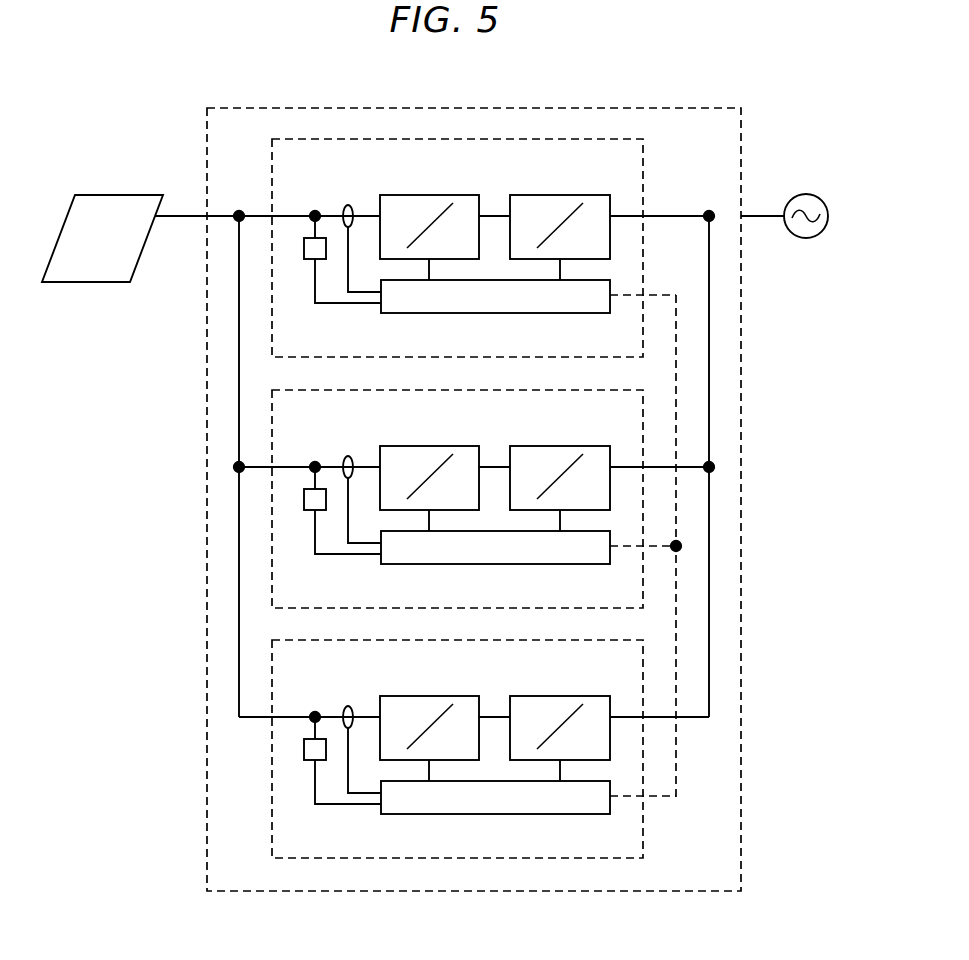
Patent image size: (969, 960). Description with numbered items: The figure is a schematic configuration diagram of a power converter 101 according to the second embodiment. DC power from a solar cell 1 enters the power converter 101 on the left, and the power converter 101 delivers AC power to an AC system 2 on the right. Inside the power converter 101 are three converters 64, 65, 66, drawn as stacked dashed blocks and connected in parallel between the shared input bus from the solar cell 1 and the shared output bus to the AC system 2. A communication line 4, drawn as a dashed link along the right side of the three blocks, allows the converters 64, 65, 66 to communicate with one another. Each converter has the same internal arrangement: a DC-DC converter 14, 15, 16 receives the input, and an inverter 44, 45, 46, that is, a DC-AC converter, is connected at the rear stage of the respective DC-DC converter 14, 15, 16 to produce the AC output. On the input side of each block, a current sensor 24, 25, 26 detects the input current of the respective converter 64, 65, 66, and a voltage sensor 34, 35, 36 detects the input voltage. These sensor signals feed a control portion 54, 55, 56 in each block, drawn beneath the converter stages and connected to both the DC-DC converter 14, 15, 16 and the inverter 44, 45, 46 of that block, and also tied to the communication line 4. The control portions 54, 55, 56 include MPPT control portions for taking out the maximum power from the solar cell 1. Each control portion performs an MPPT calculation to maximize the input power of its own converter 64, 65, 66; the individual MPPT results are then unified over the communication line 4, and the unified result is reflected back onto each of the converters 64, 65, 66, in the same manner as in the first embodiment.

The solar cell 1 is at (135, 193).
The AC system 2 is at (808, 193).
The power converter 101 is at (647, 107).
The communication line 4 is at (676, 761).
The DC-DC converter 14 is at (430, 195).
The DC-DC converter 15 is at (434, 473).
The DC-DC converter 16 is at (434, 723).
The current sensor 24 is at (348, 205).
The current sensor 25 is at (361, 476).
The current sensor 26 is at (361, 726).
The voltage sensor 34 is at (307, 265).
The voltage sensor 35 is at (330, 510).
The voltage sensor 36 is at (330, 760).
The inverter 44 is at (560, 195).
The inverter 45 is at (565, 473).
The inverter 46 is at (565, 723).
The control portion 54 is at (498, 313).
The control portion 55 is at (528, 565).
The control portion 56 is at (528, 815).
The converter 64 is at (273, 336).
The converter 65 is at (457, 499).
The converter 66 is at (457, 749).